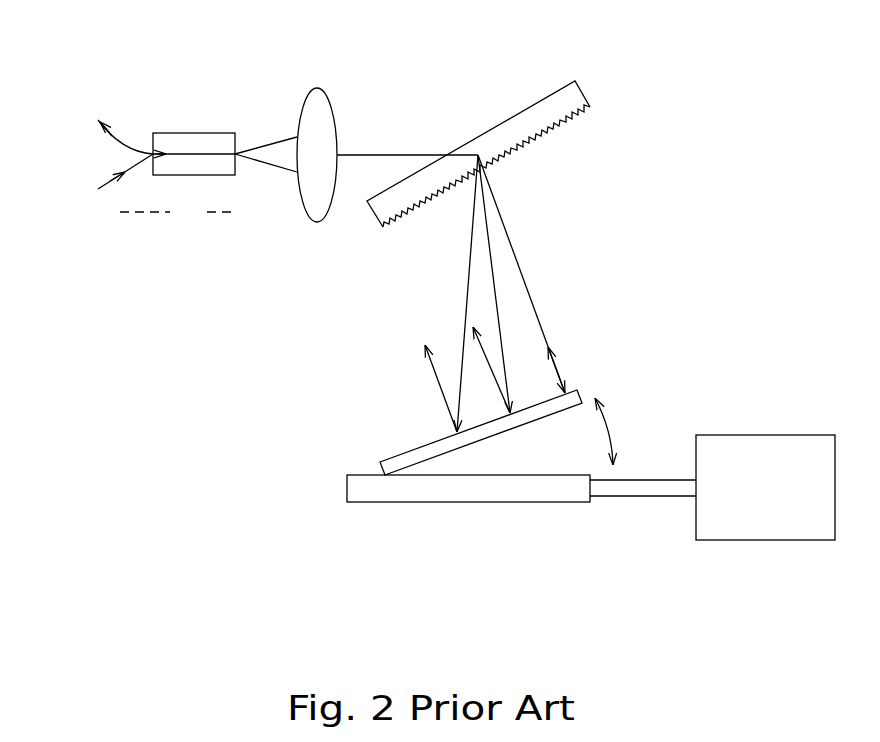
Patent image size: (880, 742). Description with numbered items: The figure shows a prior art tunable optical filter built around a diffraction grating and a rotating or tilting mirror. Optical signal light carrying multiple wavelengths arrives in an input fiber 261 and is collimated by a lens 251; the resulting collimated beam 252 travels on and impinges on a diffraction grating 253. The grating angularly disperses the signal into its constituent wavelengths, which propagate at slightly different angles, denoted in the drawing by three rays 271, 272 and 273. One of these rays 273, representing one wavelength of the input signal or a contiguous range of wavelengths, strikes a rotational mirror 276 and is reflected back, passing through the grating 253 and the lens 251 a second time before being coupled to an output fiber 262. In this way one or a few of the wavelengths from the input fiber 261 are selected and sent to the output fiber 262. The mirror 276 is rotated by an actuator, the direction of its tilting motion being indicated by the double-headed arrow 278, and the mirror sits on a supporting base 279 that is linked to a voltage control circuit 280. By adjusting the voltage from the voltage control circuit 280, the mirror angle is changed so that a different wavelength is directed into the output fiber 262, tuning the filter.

The lens 251 is at (333, 95).
The collimated light beam 252 is at (358, 152).
The diffraction grating 253 is at (585, 88).
The input fiber 261 is at (169, 178).
The output fiber 262 is at (106, 123).
The ray 271 is at (467, 288).
The ray 272 is at (507, 337).
The ray 273 is at (522, 265).
The rotational mirror 276 is at (397, 452).
The rotation direction of mirror 278 is at (622, 425).
The mirror base / actuator 279 is at (472, 508).
The voltage control circuit 280 is at (765, 430).